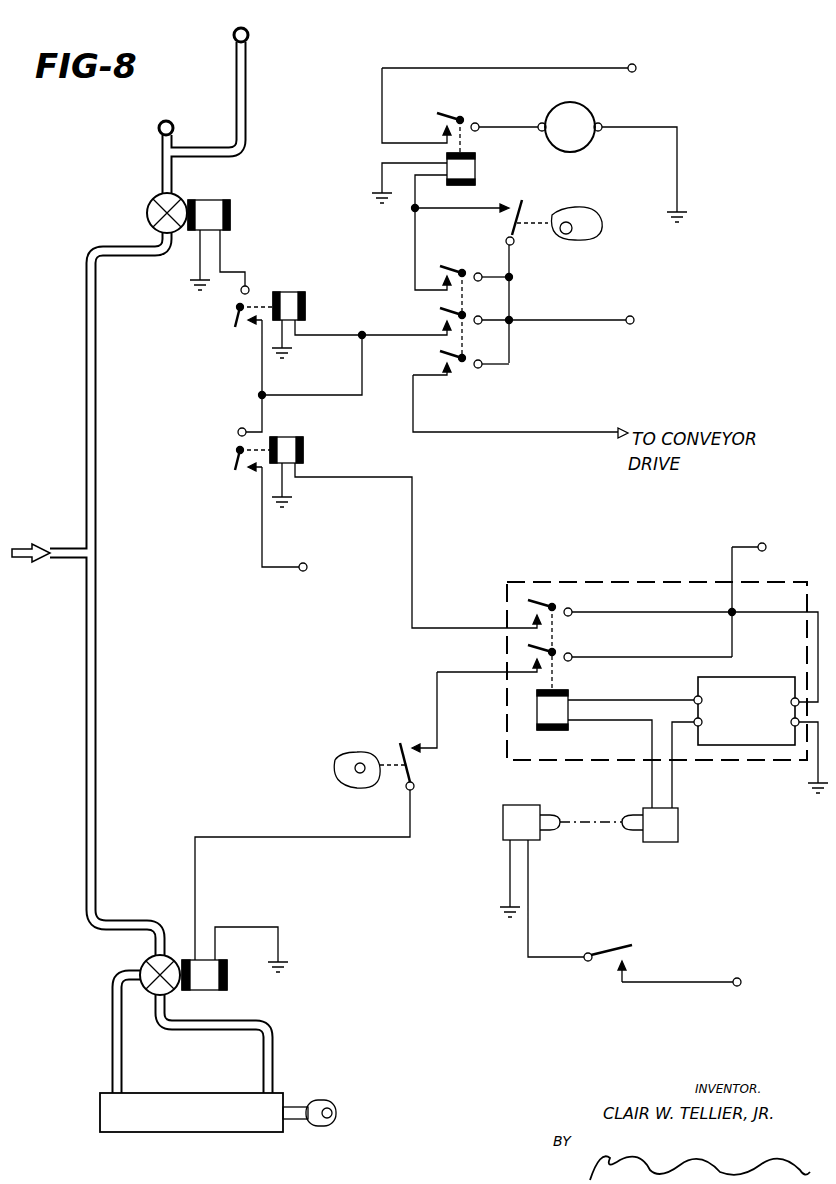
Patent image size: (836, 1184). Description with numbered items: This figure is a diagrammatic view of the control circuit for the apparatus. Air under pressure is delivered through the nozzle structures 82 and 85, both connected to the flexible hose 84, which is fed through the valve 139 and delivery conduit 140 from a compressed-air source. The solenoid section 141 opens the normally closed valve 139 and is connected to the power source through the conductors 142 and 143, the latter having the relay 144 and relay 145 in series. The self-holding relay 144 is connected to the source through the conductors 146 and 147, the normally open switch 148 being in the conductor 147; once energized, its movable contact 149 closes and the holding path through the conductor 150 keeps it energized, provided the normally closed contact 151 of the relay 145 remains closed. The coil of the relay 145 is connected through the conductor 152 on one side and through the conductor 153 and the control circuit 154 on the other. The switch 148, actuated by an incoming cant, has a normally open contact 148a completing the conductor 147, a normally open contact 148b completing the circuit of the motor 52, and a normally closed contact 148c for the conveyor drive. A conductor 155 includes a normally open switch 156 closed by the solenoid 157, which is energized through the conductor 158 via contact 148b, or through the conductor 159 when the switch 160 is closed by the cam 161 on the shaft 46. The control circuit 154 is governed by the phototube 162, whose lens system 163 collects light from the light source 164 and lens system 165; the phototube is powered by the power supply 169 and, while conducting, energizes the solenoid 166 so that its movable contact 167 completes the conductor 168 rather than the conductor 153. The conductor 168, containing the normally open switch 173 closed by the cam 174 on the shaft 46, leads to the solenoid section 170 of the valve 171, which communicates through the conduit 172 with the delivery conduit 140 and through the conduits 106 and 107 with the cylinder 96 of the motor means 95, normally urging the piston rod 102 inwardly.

The shaft 46 is at (562, 248).
The motor 52 is at (586, 108).
The nozzle structure 82 is at (160, 120).
The flexible hose 84 is at (160, 185).
The nozzle structure 85 is at (247, 35).
The motor means 95 is at (118, 1138).
The cylinder 96 is at (200, 1130).
The piston rod 102 is at (303, 1120).
The conduit 106 is at (112, 1048).
The conduit 107 is at (272, 1070).
The valve 139 is at (146, 213).
The delivery conduit 140 is at (62, 548).
The solenoid section 141 is at (229, 205).
The conductor 142 is at (198, 270).
The conductor 143 is at (280, 565).
The relay 144 is at (290, 292).
The relay 145 is at (304, 449).
The conductor 146 is at (286, 340).
The conductor 147 is at (562, 333).
The switch 148 is at (474, 297).
The normally open contact 148a is at (440, 311).
The normally open contact 148b is at (452, 266).
The normally closed contact 148c is at (464, 378).
The movable contact 149 is at (232, 320).
The conductor 150 is at (342, 400).
The normally closed contact 151 is at (233, 452).
The conductor 152 is at (286, 487).
The conductor 153 is at (412, 562).
The control circuit 154 is at (674, 552).
The conductor 155 is at (479, 45).
The switch 156 is at (455, 113).
The solenoid 157 is at (476, 168).
The conductor 158 is at (413, 262).
The conductor 159 is at (443, 223).
The switch 160 is at (520, 205).
The cam 161 is at (584, 210).
The phototube 162 is at (680, 830).
The optical lens system 163 is at (630, 845).
The light source 164 is at (505, 835).
The lens system 165 is at (552, 842).
The solenoid 166 is at (536, 712).
The movable contact 167 is at (530, 652).
The conductor 168 is at (437, 686).
The power supply 169 is at (752, 740).
The solenoid section 170 is at (222, 984).
The valve 171 is at (148, 962).
The conduit 172 is at (85, 855).
The switch 173 is at (412, 766).
The cam 174 is at (340, 793).